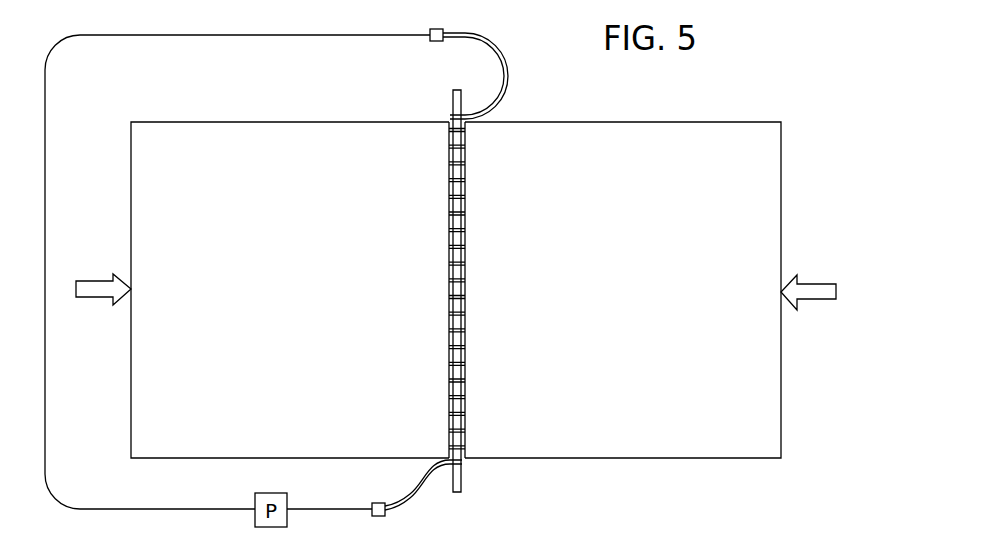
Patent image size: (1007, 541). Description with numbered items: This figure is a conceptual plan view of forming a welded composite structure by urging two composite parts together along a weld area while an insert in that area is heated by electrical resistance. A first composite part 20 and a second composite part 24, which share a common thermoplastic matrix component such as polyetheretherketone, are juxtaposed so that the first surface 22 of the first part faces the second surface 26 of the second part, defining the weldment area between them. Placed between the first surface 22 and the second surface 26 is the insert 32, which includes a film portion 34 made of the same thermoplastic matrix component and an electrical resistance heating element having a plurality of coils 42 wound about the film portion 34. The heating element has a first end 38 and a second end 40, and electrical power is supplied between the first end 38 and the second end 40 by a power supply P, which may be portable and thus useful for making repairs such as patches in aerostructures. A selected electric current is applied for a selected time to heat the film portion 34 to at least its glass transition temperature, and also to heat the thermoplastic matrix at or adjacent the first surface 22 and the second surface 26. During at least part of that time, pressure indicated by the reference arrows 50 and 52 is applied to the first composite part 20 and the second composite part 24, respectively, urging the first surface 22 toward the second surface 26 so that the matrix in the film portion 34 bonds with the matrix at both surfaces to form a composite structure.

The first composite part 20 is at (310, 388).
The first surface 22 is at (449, 393).
The second composite part 24 is at (620, 388).
The second surface 26 is at (466, 393).
The insert 32 is at (472, 267).
The film portion 34 is at (455, 88).
The first end 38 is at (508, 62).
The second end 40 is at (412, 505).
The coils 42 is at (466, 243).
The reference arrow 50 is at (103, 277).
The reference arrow 52 is at (808, 284).